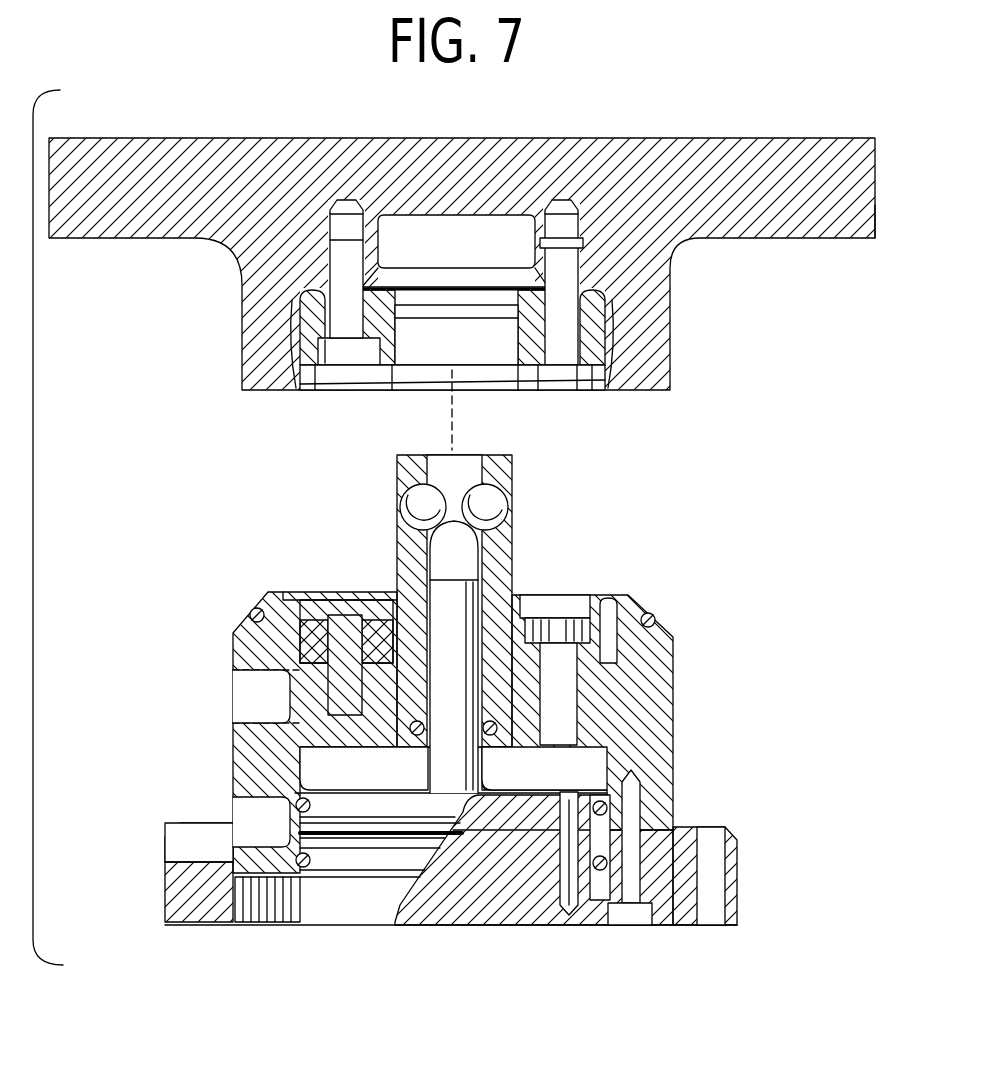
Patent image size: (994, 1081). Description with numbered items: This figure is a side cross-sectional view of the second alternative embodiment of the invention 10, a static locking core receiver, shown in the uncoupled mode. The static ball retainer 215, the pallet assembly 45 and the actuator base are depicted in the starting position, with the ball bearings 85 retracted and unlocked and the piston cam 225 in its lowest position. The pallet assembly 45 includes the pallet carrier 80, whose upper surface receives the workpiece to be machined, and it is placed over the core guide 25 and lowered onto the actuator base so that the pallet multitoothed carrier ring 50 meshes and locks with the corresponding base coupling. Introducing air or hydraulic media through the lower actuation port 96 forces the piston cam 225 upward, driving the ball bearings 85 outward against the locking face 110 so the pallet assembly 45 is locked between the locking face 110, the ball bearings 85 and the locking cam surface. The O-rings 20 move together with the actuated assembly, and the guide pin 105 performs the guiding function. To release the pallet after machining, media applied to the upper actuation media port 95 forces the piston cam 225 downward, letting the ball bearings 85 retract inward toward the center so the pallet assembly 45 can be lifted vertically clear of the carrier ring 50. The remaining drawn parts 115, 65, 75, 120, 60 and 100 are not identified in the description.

The invention 10 is at (255, 99).
The pallet carrier 80 is at (663, 140).
The pallet assembly 45 is at (875, 207).
The block 115 is at (468, 250).
The bolt 65 is at (358, 276).
The bolt 75 is at (575, 291).
The locking face 110 is at (398, 305).
The carrier plate 120 is at (298, 378).
The pallet multitoothed carrier ring 50 is at (606, 350).
The ball bearings 85 is at (436, 518).
The piston cam 225 is at (462, 600).
The O-rings 20 is at (252, 606).
The upper actuation media port 95 is at (258, 697).
The lower actuation port 96 is at (257, 811).
The static ball retainer 215 is at (535, 745).
The core guide 25 is at (455, 906).
The guide pin 105 is at (567, 900).
The bolt 60 is at (633, 914).
The mounting flange 100 is at (711, 894).